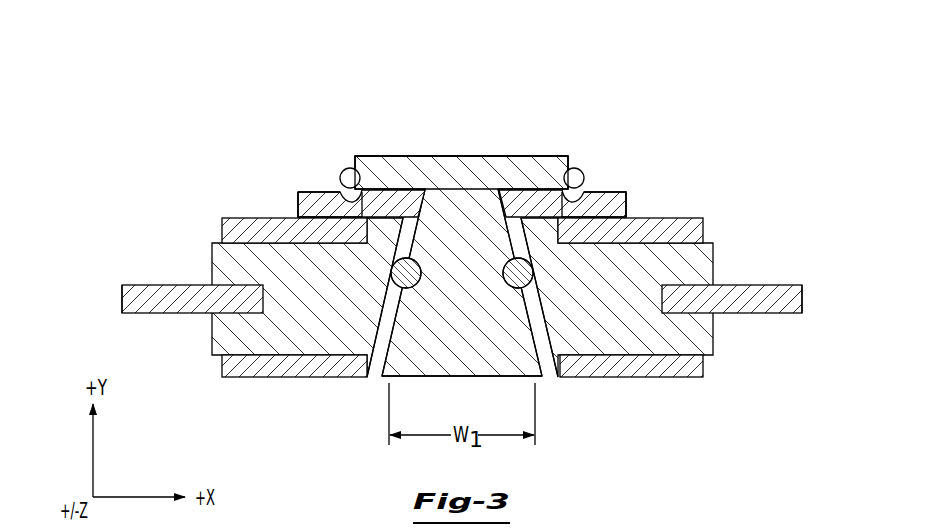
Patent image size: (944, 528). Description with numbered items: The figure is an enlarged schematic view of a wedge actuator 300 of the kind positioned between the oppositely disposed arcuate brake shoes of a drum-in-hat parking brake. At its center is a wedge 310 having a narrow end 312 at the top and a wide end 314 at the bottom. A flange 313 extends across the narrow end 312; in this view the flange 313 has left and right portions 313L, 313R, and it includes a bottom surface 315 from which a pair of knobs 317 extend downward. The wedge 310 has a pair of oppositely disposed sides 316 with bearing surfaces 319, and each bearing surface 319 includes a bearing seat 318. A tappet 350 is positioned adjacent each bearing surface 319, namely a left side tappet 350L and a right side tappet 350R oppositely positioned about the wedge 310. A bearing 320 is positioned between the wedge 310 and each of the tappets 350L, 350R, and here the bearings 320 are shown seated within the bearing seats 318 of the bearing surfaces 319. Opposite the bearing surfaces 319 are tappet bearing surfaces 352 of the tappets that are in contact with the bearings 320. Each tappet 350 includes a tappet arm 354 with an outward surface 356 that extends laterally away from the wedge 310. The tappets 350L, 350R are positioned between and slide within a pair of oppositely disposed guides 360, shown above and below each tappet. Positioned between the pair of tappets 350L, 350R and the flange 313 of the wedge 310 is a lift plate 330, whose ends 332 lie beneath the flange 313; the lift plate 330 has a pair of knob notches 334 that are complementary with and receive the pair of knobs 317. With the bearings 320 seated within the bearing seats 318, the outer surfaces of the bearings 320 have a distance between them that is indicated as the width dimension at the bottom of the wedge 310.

The wedge actuator 300 is at (550, 78).
The wedge 310 is at (472, 378).
The narrow end 312 is at (462, 157).
The flange 313 is at (477, 156).
The left top extension 313L is at (340, 165).
The right top extension 313R is at (588, 165).
The wide end 314 is at (412, 378).
The bottom surface 315 is at (397, 189).
The sides 316 is at (374, 350).
The knobs 317 is at (352, 190).
The bearing seat 318 is at (508, 262).
The bearing surfaces 319 is at (385, 324).
The bearing 320 is at (410, 282).
The lift plate 330 is at (633, 206).
The retainer outer end 332 is at (305, 192).
The knob notches 334 is at (345, 208).
The tappet 350 is at (730, 380).
The left side tappet 350L is at (212, 340).
The right side tappet 350R is at (713, 343).
The tappet bearing surfaces 352 is at (369, 327).
The tappet arm 354 is at (167, 285).
The outward surface 356 is at (122, 298).
The guides 360 is at (222, 232).